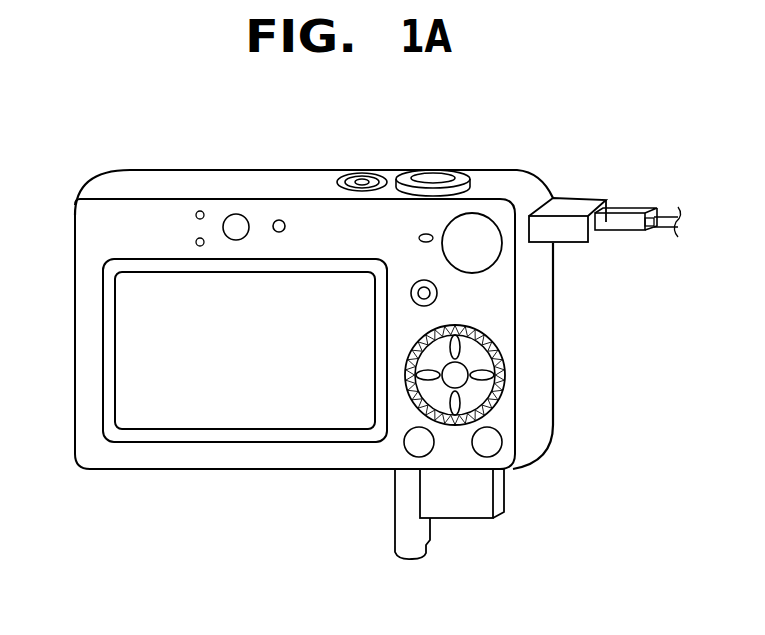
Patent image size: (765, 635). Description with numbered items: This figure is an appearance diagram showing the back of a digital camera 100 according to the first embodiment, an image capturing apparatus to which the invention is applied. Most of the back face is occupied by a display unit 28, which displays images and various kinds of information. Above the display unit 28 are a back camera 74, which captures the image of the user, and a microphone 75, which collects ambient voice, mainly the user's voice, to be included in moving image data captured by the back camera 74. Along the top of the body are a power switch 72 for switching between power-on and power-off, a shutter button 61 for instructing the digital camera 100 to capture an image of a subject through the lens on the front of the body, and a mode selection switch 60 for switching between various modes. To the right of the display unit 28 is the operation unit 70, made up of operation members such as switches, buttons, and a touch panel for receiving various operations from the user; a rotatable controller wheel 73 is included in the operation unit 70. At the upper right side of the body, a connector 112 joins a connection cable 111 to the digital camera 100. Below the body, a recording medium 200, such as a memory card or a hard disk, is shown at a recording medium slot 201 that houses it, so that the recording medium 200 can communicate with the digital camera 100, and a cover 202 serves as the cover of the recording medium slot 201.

The digital camera 100 is at (148, 500).
The display unit 28 is at (158, 285).
The mode selection switch 60 is at (474, 222).
The shutter button 61 is at (433, 176).
The operation unit 70 is at (438, 190).
The power switch 72 is at (357, 178).
The controller wheel 73 is at (405, 383).
The back camera 74 is at (233, 213).
The microphone 75 is at (281, 218).
The connection cable 111 is at (625, 212).
The connector 112 is at (551, 197).
The recording medium 200 is at (463, 512).
The recording medium slot 201 is at (433, 470).
The cover 202 is at (418, 560).